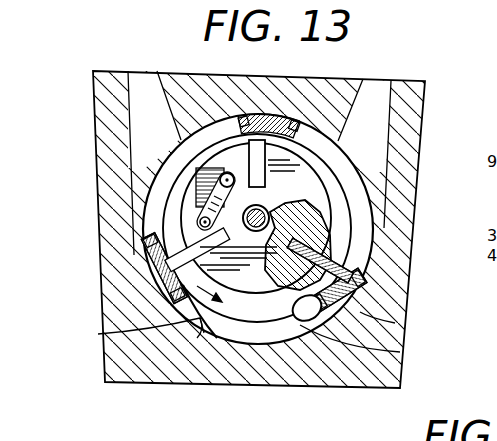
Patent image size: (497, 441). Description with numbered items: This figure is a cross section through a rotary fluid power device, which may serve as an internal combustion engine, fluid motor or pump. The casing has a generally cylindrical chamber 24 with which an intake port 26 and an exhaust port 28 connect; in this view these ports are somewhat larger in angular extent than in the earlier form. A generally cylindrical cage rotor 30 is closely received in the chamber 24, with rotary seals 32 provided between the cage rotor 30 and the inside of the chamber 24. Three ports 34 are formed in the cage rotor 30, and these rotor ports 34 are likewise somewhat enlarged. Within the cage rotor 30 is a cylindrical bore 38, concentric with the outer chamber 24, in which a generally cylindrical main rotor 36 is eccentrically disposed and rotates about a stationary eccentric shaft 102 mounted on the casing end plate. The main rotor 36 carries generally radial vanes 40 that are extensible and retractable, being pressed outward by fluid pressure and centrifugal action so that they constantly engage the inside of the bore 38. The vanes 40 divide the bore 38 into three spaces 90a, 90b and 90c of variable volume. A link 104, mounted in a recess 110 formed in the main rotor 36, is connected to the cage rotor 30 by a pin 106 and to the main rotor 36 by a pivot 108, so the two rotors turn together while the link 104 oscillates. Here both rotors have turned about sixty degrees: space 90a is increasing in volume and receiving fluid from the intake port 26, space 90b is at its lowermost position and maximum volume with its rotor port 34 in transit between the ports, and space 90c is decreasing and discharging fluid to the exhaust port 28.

The cylindrical chamber 24 is at (197, 338).
The intake port 26 is at (145, 88).
The exhaust port 28 is at (378, 95).
The cage rotor 30 is at (150, 282).
The rotary seals 32 is at (150, 252).
The ports 34 is at (175, 161).
The main rotor 36 is at (345, 222).
The chamber or bore 38 is at (400, 352).
The radial vanes 40 is at (98, 334).
The space 90a is at (177, 226).
The space 90b is at (277, 312).
The space 90c is at (337, 242).
The stationary eccentric shaft 102 is at (267, 206).
The link 104 is at (212, 192).
The pivot or pin 106 is at (226, 178).
The pivot 108 is at (207, 211).
The recess 110 is at (200, 172).